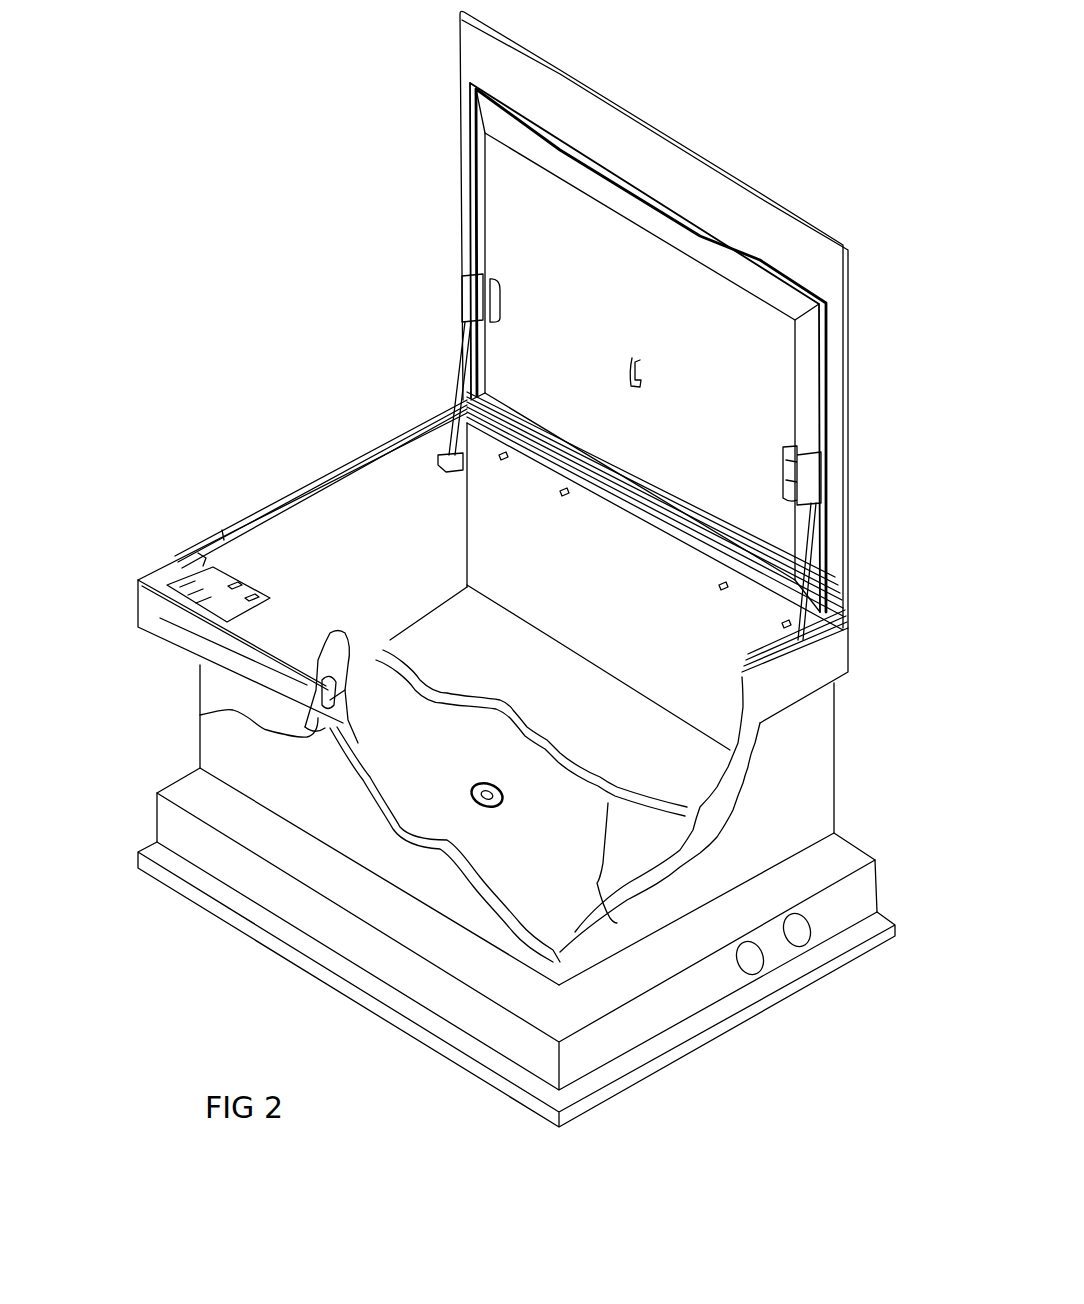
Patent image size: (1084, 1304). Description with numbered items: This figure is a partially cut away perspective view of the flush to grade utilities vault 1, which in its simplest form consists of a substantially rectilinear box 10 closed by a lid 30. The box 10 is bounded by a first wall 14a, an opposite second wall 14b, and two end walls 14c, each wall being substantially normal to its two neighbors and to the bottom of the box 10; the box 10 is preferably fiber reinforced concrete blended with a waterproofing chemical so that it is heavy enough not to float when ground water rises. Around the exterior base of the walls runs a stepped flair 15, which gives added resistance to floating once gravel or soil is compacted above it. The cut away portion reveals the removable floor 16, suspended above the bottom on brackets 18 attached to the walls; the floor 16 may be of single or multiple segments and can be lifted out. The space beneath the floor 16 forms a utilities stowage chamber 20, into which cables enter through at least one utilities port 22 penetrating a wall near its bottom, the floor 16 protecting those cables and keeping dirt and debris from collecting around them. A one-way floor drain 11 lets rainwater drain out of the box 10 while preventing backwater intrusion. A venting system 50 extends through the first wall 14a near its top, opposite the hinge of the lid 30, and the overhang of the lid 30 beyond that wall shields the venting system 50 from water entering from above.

The flush to grade utilities vault 1 is at (222, 254).
The box 10 is at (131, 709).
The one-way floor drain 11 is at (481, 783).
The first wall 14a is at (380, 825).
The second wall 14b is at (598, 667).
The end walls 14c is at (568, 766).
The stepped flair 15 is at (190, 842).
The removable floor 16 is at (531, 755).
The brackets 18 is at (193, 661).
The utilities stowage chamber 20 is at (700, 963).
The utilities port 22 is at (750, 958).
The lid 30 is at (388, 192).
The venting system 50 is at (200, 715).